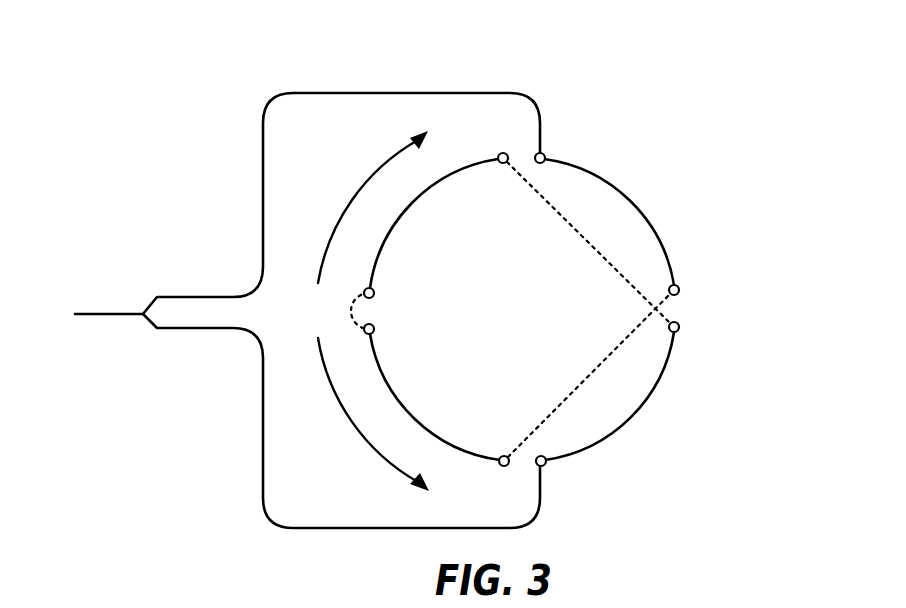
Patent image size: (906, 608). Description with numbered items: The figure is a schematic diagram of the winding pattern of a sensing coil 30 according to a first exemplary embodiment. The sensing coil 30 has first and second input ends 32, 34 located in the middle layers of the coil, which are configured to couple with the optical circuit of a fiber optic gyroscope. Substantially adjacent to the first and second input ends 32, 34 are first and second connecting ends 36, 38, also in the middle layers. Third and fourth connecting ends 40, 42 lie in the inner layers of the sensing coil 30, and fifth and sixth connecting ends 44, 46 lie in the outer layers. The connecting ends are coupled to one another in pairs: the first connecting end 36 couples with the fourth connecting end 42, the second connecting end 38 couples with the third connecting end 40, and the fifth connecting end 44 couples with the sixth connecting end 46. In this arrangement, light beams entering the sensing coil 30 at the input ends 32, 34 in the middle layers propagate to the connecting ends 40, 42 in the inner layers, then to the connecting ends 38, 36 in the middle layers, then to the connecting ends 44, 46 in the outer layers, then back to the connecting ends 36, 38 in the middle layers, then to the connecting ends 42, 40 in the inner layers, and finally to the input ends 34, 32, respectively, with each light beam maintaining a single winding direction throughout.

The sensing coil 30 is at (688, 41).
The first input end 32 is at (544, 154).
The second input end 34 is at (546, 464).
The first connecting end 36 is at (501, 164).
The second connecting end 38 is at (503, 455).
The third connecting end 40 is at (678, 284).
The fourth connecting end 42 is at (679, 330).
The fifth connecting end 44 is at (374, 331).
The sixth connecting end 46 is at (374, 291).